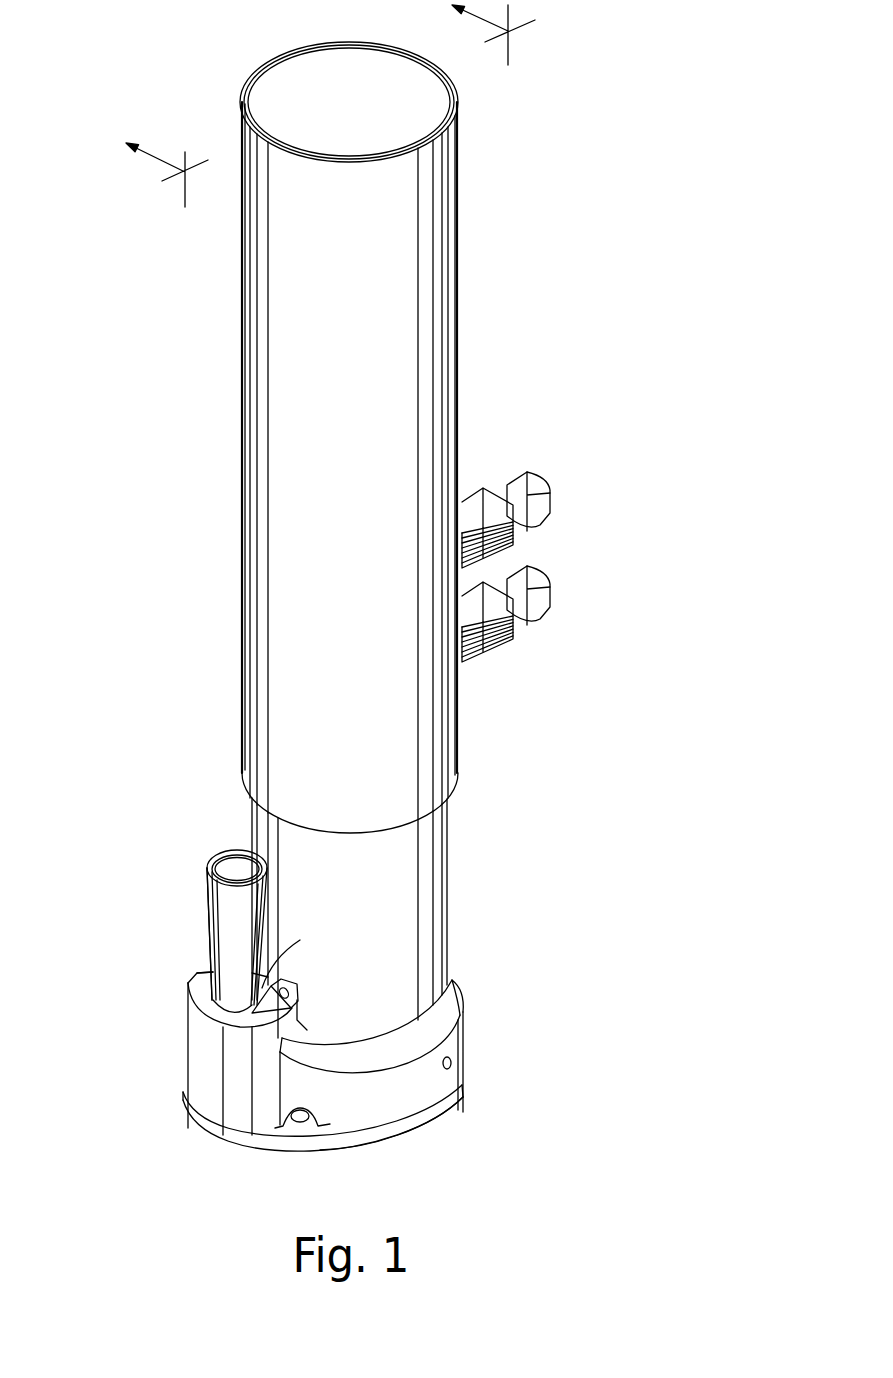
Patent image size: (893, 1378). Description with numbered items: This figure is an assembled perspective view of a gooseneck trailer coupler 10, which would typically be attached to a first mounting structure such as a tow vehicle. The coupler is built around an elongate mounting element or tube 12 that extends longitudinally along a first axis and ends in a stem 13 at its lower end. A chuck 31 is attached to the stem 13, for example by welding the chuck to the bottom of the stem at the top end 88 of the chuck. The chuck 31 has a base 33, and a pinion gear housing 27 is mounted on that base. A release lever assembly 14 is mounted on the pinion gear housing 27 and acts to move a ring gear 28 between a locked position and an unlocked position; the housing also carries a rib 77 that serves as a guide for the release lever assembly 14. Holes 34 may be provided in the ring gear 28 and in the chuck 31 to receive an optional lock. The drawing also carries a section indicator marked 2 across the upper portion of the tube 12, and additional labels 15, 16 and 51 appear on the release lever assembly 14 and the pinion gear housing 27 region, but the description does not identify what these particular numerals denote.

The section line 2- 2 is at (339, 106).
The gooseneck trailer coupler 10 is at (150, 806).
The mounting element or tube 12 is at (273, 702).
The stem 13 is at (427, 880).
The release lever assembly 14 is at (186, 949).
The inlet opening 15 is at (233, 860).
The inlet tube 16 is at (216, 907).
The pinion gear housing 27 is at (197, 1043).
The ring gear 28 is at (433, 1092).
The chuck 31 is at (400, 1130).
The base 33 is at (210, 1140).
The holes 34 is at (299, 1126).
The top surface of housing block 51 is at (197, 990).
The rib 77 is at (283, 982).
The top end 88 is at (445, 1012).